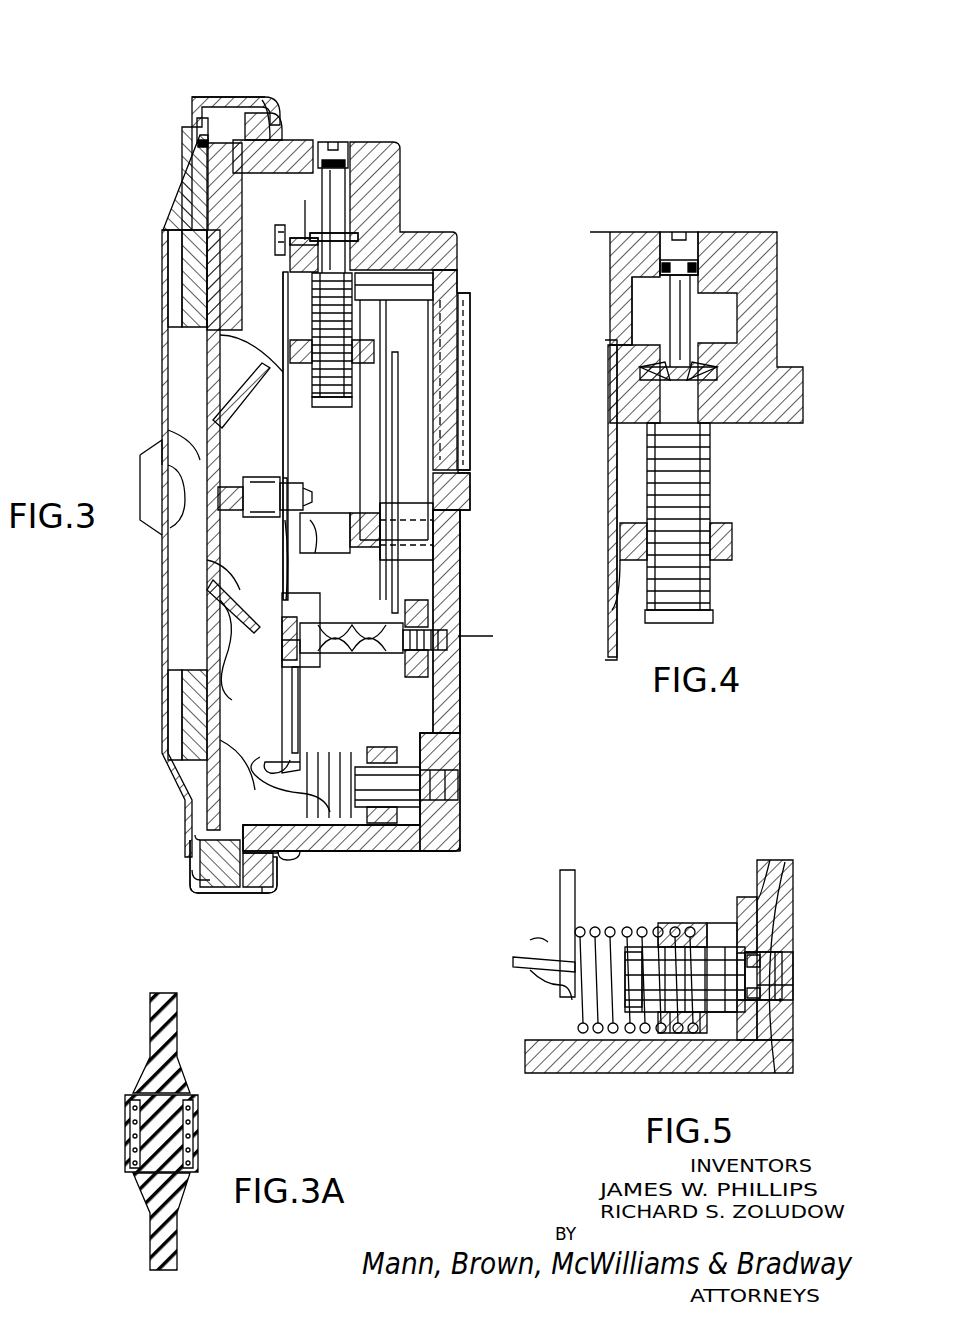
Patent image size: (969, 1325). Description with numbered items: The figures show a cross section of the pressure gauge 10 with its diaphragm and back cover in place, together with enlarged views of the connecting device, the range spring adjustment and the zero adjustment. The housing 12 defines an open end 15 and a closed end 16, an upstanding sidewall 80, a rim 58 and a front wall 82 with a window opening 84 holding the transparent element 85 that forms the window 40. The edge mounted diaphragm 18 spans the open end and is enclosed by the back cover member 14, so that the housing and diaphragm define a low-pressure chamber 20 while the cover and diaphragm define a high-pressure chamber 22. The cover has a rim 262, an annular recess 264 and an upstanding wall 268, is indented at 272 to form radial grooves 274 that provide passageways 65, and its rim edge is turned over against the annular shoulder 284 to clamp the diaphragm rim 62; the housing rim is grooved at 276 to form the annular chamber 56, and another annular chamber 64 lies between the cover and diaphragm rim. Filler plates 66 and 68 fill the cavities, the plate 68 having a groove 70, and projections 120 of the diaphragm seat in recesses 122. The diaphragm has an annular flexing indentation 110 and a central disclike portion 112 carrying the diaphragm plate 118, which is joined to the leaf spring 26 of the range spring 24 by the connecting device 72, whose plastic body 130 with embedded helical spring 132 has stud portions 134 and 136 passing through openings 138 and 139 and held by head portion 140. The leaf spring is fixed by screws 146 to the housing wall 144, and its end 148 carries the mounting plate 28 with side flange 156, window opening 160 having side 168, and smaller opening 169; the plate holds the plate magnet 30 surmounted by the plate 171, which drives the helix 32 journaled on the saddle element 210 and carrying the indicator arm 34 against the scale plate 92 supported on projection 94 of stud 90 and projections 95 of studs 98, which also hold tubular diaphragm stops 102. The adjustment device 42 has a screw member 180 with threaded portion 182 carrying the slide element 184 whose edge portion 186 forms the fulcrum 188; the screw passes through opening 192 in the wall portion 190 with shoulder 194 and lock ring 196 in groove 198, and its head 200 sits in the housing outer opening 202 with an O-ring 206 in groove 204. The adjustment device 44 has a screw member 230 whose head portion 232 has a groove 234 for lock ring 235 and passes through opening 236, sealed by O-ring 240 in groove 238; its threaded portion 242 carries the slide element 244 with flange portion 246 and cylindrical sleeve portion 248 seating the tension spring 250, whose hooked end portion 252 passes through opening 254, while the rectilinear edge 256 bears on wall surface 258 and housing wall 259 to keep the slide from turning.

In FIG. 3, the pressure gauge 10 is at (450, 92).
In FIG. 3, the housing 12 is at (418, 138).
In FIG. 3, the back cover member 14 is at (178, 108).
In FIG. 3, the open end 15 is at (262, 893).
In FIG. 3, the closed end 16 is at (461, 742).
In FIG. 3, the diaphragm 18 is at (200, 588).
In FIG. 3, the low-pressure chamber 20 is at (180, 720).
In FIG. 3, the high-pressure chamber 22 is at (195, 383).
In FIG. 3, the range spring 24 is at (273, 317).
In FIG. 3, the leaf spring 26 is at (290, 430).
In FIG. 3, the mounting plate 28 is at (300, 722).
In FIG. 3, the plate magnet 30 is at (310, 605).
In FIG. 3, the helix 32 is at (420, 600).
In FIG. 3, the indicator arm 34 is at (400, 548).
In FIG. 3, the window 40 is at (468, 398).
In FIG. 3, the adjustment device 42 is at (352, 148).
In FIG. 4, the adjustment device 42 is at (668, 222).
In FIG. 3, the adjustment device 44 is at (472, 778).
In FIG. 5, the adjustment device 44 is at (800, 978).
In FIG. 3, the annular chamber 56 is at (265, 130).
In FIG. 3, the rim 58 is at (270, 890).
In FIG. 3, the diaphragm rim 62 is at (228, 890).
In FIG. 3, the annular chamber 64 is at (195, 130).
In FIG. 3, the passageways 65 is at (198, 172).
In FIG. 3, the filler plate 66 is at (306, 215).
In FIG. 3, the filler plate 68 is at (195, 240).
In FIG. 3, the groove 70 is at (178, 275).
In FIG. 3, the connecting device 72 is at (305, 478).
In FIG. 3, the sidewall 80 is at (360, 852).
In FIG. 3, the front wall 82 is at (458, 600).
In FIG. 3, the window opening 84 is at (465, 475).
In FIG. 3, the transparent element 85 is at (455, 432).
In FIG. 3, the studs 90 is at (430, 280).
In FIG. 3, the scale plate 92 is at (455, 300).
In FIG. 3, the projection 94 is at (395, 295).
In FIG. 3, the projections 95 is at (350, 497).
In FIG. 3, the studs 98 is at (410, 492).
In FIG. 3, the tubular diaphragm stop 102 is at (370, 520).
In FIG. 3, the annular flexing indentation 110 is at (251, 650).
In FIG. 3, the central disclike portion 112 is at (205, 570).
In FIG. 3, the diaphragm plate 118 is at (210, 420).
In FIG. 3, the projections 120 is at (297, 155).
In FIG. 3, the recesses 122 is at (290, 245).
In FIG. 3, the plastic body 130 is at (248, 477).
In FIG. 3A, the plastic body 130 is at (198, 1112).
In FIG. 3A, the helical spring 132 is at (193, 1135).
In FIG. 3, the stud portion 134 is at (243, 512).
In FIG. 3A, the stud portion 134 is at (170, 1238).
In FIG. 3A, the stud portion 136 is at (170, 1028).
In FIG. 3, the opening 138 is at (180, 455).
In FIG. 3, the opening 139 is at (300, 482).
In FIG. 3, the head portion 140 is at (325, 533).
In FIG. 3, the housing wall 144 is at (350, 145).
In FIG. 3, the screws 146 is at (275, 225).
In FIG. 3, the end 148 is at (312, 532).
In FIG. 3, the side flange 156 is at (215, 770).
In FIG. 3, the window opening 160 is at (292, 682).
In FIG. 3, the side 168 is at (285, 590).
In FIG. 3, the rectangular opening 169 is at (300, 745).
In FIG. 3, the plate 171 is at (380, 605).
In FIG. 3, the screw member 180 is at (340, 205).
In FIG. 3, the threaded portion 182 is at (355, 378).
In FIG. 4, the threaded portion 182 is at (712, 576).
In FIG. 3, the slide element 184 is at (378, 345).
In FIG. 4, the slide element 184 is at (735, 545).
In FIG. 3, the edge portion 186 is at (215, 340).
In FIG. 4, the edge portion 186 is at (625, 572).
In FIG. 3, the fulcrum 188 is at (215, 375).
In FIG. 4, the fulcrum 188 is at (615, 540).
In FIG. 4, the housing block 190 is at (632, 390).
In FIG. 3, the opening 192 is at (362, 250).
In FIG. 4, the opening 192 is at (740, 423).
In FIG. 4, the shoulder 194 is at (604, 430).
In FIG. 4, the lock ring 196 is at (730, 374).
In FIG. 4, the groove 198 is at (700, 362).
In FIG. 4, the head 200 is at (700, 265).
In FIG. 4, the housing outer opening 202 is at (692, 235).
In FIG. 4, the groove 204 is at (705, 270).
In FIG. 4, the O-ring 206 is at (710, 247).
In FIG. 3, the saddle element 210 is at (438, 665).
In FIG. 5, the screw member 230 is at (770, 862).
In FIG. 5, the head portion 232 is at (778, 960).
In FIG. 5, the groove 234 is at (798, 985).
In FIG. 5, the lock ring 235 is at (790, 998).
In FIG. 5, the opening 236 is at (778, 1020).
In FIG. 5, the groove 238 is at (765, 955).
In FIG. 5, the O-ring 240 is at (750, 1010).
In FIG. 5, the threaded portion 242 is at (712, 935).
In FIG. 5, the slide element 244 is at (660, 1030).
In FIG. 5, the flange portion 246 is at (712, 1035).
In FIG. 5, the cylindrical sleeve portion 248 is at (630, 1040).
In FIG. 5, the tension spring 250 is at (630, 926).
In FIG. 5, the hooked end portion 252 is at (545, 985).
In FIG. 5, the opening 254 is at (535, 940).
In FIG. 5, the rectilinear edge 256 is at (690, 1035).
In FIG. 5, the wall surface 258 is at (605, 1040).
In FIG. 5, the housing wall 259 is at (728, 910).
In FIG. 3, the rim 262 is at (230, 98).
In FIG. 3, the annular recess 264 is at (195, 893).
In FIG. 3, the upstanding wall 268 is at (200, 143).
In FIG. 3, the indentation 272 is at (182, 163).
In FIG. 3, the radial grooves 274 is at (195, 832).
In FIG. 3, the groove 276 is at (265, 100).
In FIG. 3, the annular shoulder 284 is at (285, 858).